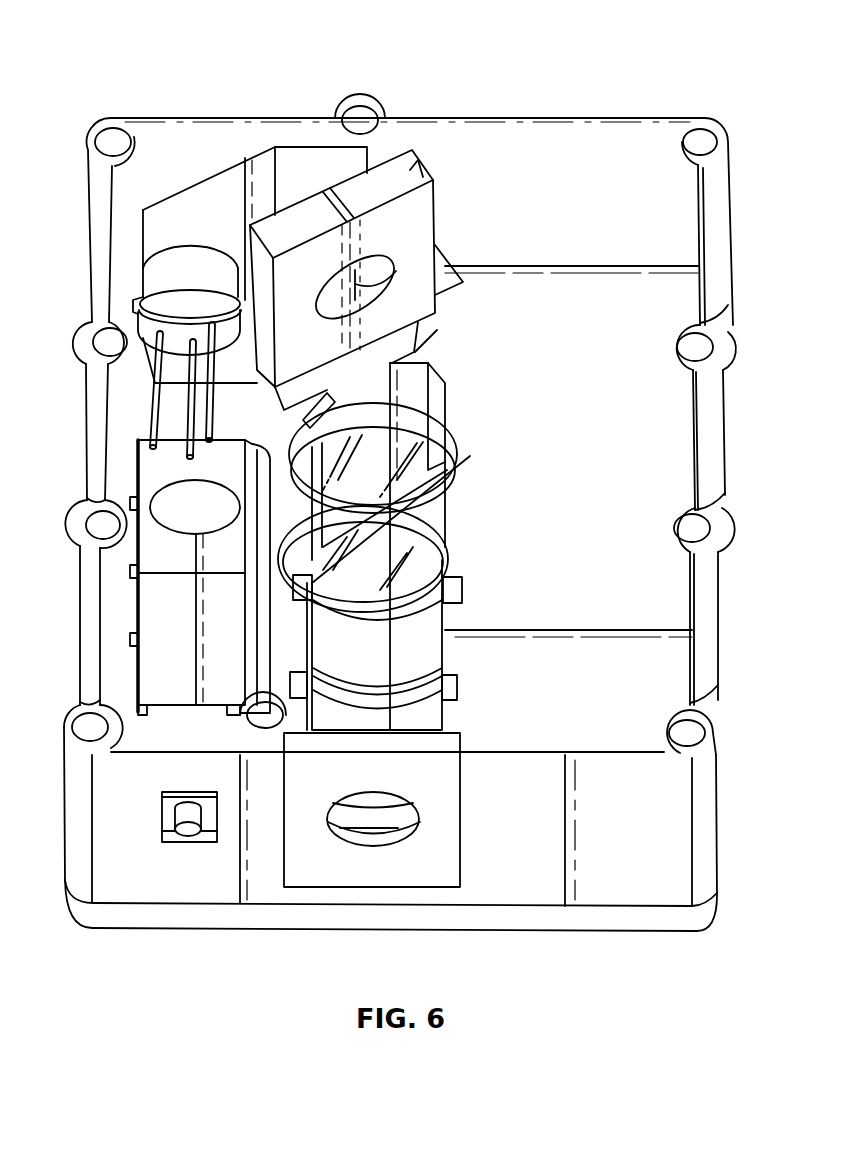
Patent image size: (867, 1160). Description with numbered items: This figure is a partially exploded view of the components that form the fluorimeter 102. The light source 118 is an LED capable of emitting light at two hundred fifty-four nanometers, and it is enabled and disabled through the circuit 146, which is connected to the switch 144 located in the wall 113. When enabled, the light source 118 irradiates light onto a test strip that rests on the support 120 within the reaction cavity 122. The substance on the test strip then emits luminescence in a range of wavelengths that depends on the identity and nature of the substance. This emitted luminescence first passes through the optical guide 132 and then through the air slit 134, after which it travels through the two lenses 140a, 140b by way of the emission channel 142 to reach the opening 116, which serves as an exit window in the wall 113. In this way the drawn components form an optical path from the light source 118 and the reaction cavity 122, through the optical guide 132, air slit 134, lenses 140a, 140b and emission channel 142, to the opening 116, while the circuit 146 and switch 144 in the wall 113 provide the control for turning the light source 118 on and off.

The fluorimeter 102 is at (120, 28).
The wall 113 is at (620, 880).
The opening 116 is at (328, 842).
The light source 118 is at (190, 280).
The support 120 is at (183, 200).
The reaction cavity 122 is at (245, 192).
The optical guide 132 is at (412, 182).
The air slit 134 is at (380, 275).
The lens 140a is at (440, 427).
The lens 140b is at (470, 456).
The emission channel 142 is at (372, 388).
The switch 144 is at (173, 840).
The circuit 146 is at (140, 593).